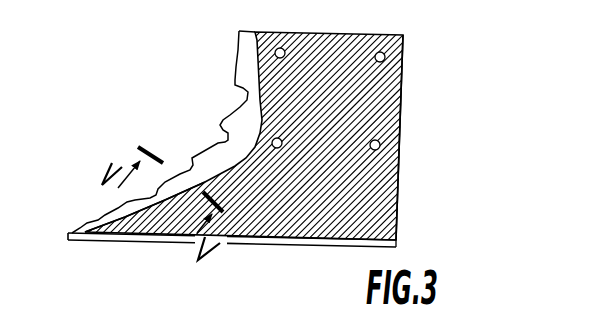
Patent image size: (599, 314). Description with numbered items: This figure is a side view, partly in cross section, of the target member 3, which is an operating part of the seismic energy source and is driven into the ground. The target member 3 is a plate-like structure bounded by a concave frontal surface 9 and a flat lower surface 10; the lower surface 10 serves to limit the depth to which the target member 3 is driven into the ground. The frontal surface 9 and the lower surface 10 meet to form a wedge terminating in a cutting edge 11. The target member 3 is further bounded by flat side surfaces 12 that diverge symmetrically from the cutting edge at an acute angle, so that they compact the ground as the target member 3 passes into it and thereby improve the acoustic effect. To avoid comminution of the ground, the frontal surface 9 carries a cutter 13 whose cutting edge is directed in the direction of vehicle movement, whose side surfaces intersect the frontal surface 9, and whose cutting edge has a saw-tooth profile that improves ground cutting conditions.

The target member 3 is at (338, 33).
The concave frontal surface 9 is at (121, 215).
The flat lower surface 10 is at (130, 242).
The cutting edge 11 is at (80, 229).
The flat side surfaces 12 is at (405, 50).
The cutter 13 is at (226, 140).